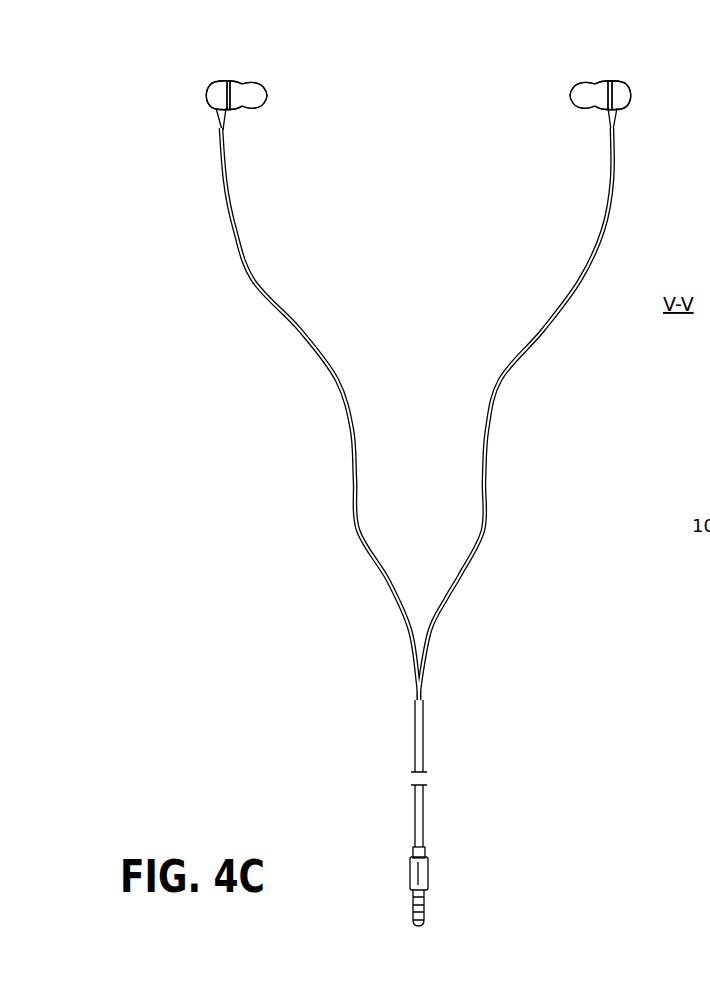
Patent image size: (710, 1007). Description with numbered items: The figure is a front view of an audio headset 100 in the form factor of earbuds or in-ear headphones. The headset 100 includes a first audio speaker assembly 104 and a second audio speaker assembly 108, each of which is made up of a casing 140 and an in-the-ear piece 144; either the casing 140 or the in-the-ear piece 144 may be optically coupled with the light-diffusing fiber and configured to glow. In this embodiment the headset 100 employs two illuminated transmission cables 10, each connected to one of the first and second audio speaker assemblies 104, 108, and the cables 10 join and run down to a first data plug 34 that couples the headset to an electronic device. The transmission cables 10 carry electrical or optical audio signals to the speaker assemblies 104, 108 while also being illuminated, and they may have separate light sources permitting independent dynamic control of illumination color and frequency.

The audio headset 100 is at (411, 128).
The transmission cable 10 is at (340, 393).
The first audio speaker assembly 104 is at (201, 109).
The second audio speaker assembly 108 is at (640, 110).
The casing 140 is at (216, 80).
The in-the-ear piece 144 is at (268, 105).
The first data plug 34 is at (410, 873).